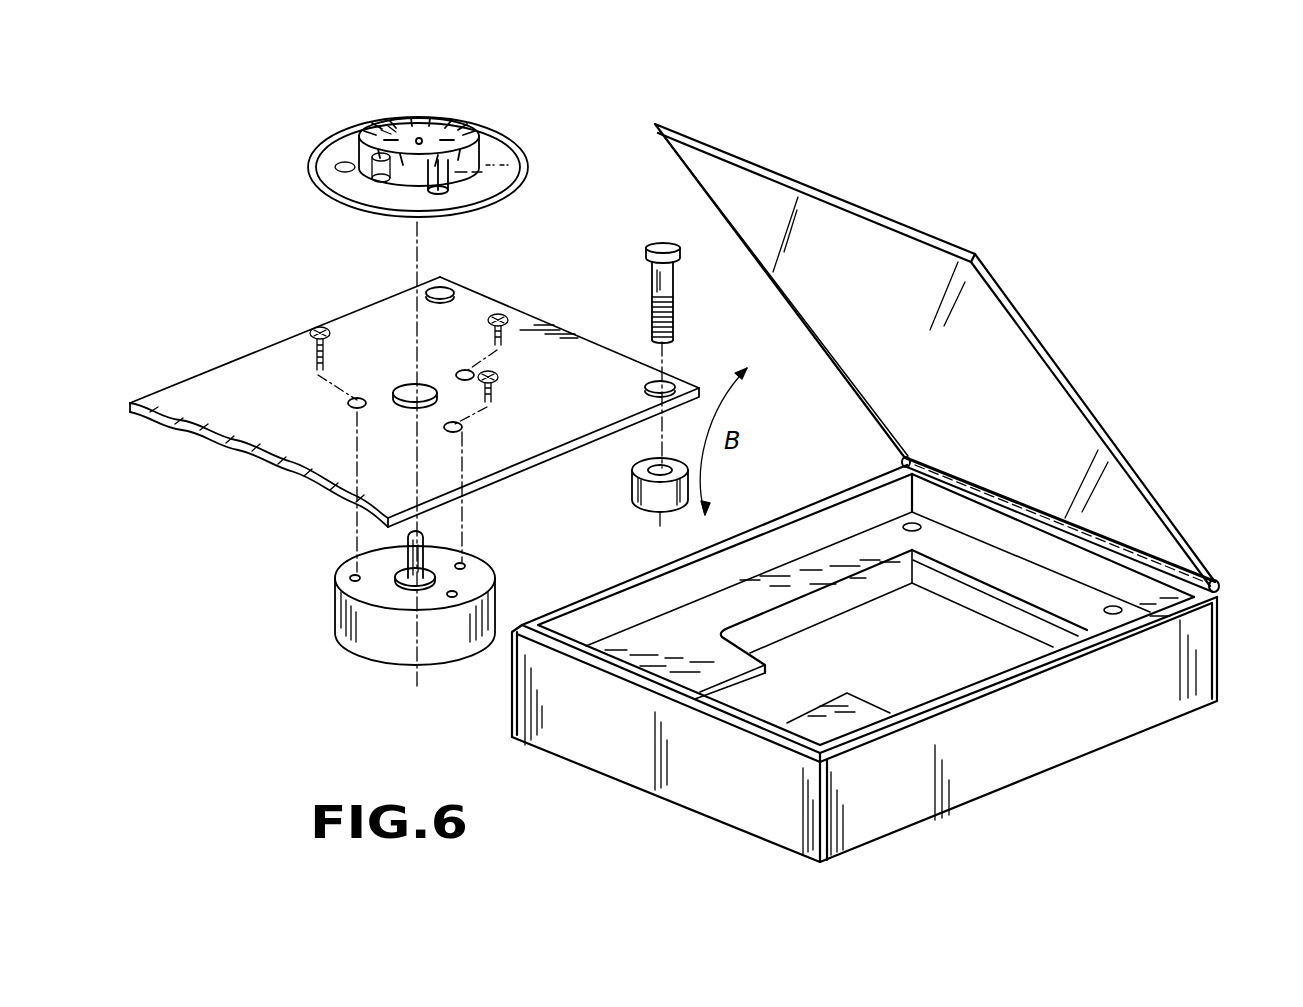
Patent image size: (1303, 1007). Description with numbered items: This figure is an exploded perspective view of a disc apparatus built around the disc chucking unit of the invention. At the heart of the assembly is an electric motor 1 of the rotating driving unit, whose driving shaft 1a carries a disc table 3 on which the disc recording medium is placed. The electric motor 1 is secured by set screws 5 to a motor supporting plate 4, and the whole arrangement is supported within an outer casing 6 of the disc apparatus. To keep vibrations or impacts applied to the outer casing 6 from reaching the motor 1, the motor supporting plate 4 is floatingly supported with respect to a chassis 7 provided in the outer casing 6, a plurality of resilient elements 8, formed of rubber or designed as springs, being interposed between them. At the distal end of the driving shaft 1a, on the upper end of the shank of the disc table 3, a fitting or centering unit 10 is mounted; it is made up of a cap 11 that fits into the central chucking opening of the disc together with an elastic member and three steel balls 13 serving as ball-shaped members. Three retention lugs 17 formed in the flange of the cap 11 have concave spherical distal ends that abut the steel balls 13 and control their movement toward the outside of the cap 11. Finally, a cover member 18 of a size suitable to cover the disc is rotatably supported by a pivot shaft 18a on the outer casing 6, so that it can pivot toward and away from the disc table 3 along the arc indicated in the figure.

The electric motor 1 is at (436, 666).
The driving shaft 1a is at (400, 560).
The disc table 3 is at (530, 162).
The motor supporting plate 4 is at (574, 348).
The set screws 5 is at (314, 334).
The outer casing 6 is at (1087, 740).
The chassis 7 is at (782, 585).
The resilient elements 8 is at (642, 504).
The centering unit 10 is at (506, 101).
The cap 11 is at (386, 125).
The steel balls 13 is at (348, 182).
The retention lugs 17 is at (380, 170).
The cover member 18 is at (1058, 357).
The pivot shaft 18a is at (1216, 579).